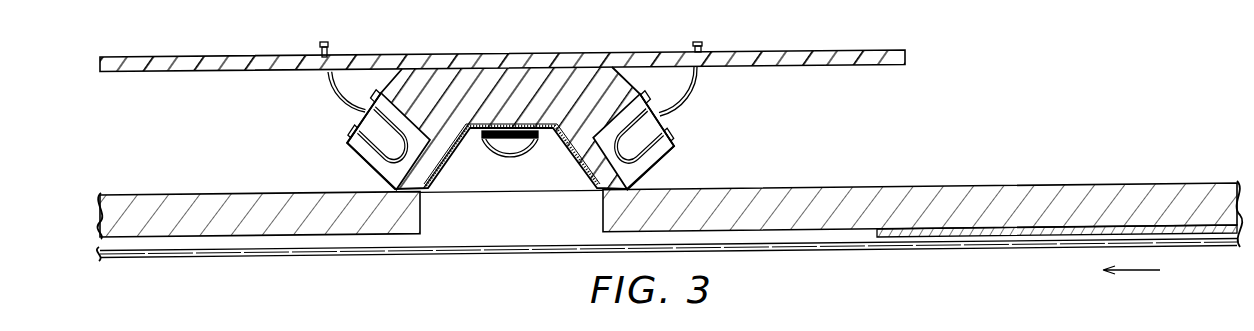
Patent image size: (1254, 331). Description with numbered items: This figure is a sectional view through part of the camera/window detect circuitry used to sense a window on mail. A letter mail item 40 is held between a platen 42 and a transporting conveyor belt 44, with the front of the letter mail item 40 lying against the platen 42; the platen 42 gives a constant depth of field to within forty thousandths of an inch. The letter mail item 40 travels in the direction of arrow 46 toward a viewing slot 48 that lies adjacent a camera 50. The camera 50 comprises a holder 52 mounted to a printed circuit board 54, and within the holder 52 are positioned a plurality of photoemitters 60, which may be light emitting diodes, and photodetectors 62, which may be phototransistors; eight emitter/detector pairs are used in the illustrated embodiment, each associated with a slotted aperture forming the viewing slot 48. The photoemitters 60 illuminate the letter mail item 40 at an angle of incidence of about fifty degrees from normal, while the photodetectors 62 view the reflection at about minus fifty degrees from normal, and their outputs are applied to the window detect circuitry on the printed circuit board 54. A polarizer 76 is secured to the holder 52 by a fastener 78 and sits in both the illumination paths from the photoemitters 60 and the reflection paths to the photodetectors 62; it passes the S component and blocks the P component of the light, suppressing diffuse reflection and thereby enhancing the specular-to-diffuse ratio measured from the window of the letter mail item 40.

The letter mail item 40 is at (1043, 235).
The platen 42 is at (206, 207).
The transporting conveyor belt 44 is at (170, 253).
The arrow 46 is at (1137, 272).
The viewing slot 48 is at (477, 227).
The camera 50 is at (727, 123).
The holder 52 is at (520, 75).
The printed circuit board 54 is at (661, 62).
The photoemitters 60 is at (388, 128).
The photodetectors 62 is at (639, 128).
The polarizer 76 is at (567, 146).
The fastener 78 is at (512, 148).